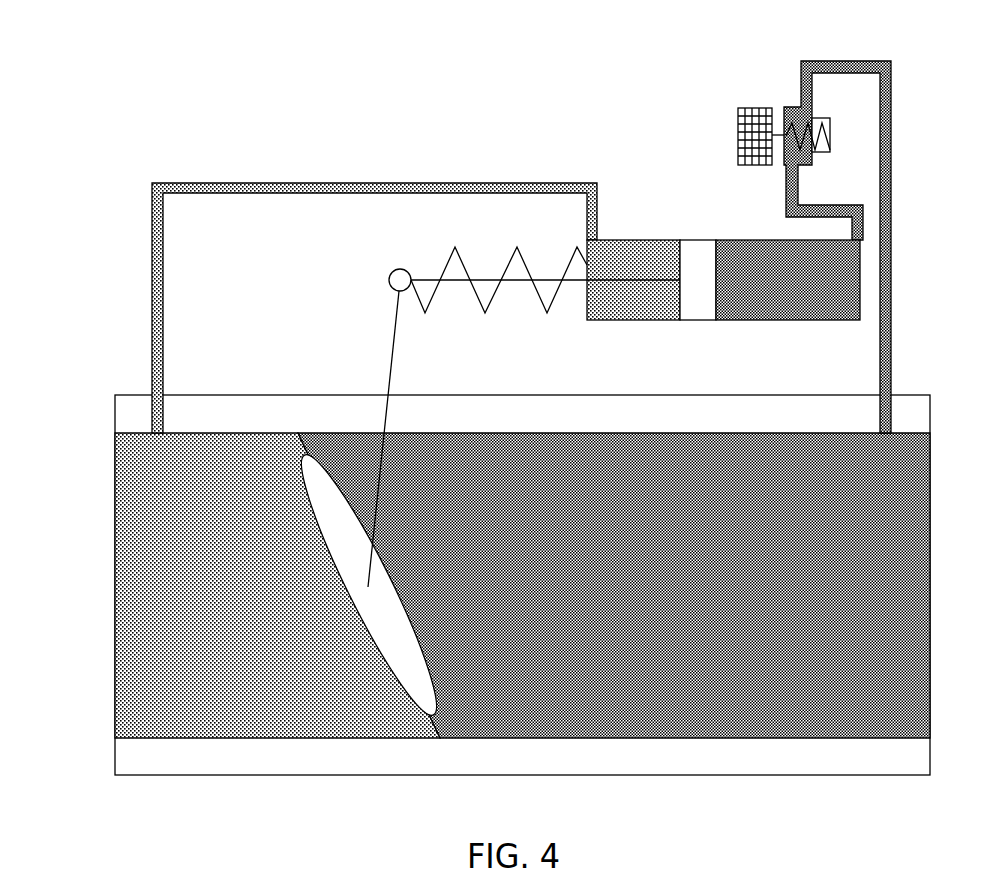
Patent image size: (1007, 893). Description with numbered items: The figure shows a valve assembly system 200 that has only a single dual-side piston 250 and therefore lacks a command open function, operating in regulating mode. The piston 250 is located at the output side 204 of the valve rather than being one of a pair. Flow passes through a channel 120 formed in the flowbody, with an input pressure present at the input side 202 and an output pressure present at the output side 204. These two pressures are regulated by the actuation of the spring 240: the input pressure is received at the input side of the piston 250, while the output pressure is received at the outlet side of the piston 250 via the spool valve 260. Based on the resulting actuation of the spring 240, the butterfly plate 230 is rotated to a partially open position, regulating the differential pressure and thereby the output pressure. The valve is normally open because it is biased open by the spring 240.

The valve assembly system 200 is at (526, 64).
The spring 240 is at (517, 247).
The dual-side piston 250 is at (740, 240).
The spool valve 260 is at (783, 108).
The butterfly plate 230 is at (385, 617).
The input side 202 is at (104, 596).
The output side 204 is at (987, 511).
The channel 120 is at (527, 585).